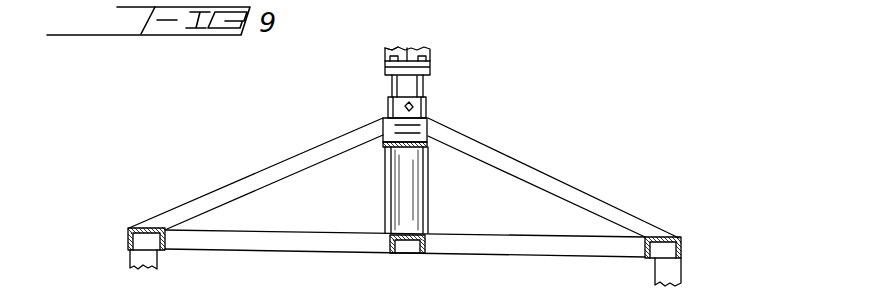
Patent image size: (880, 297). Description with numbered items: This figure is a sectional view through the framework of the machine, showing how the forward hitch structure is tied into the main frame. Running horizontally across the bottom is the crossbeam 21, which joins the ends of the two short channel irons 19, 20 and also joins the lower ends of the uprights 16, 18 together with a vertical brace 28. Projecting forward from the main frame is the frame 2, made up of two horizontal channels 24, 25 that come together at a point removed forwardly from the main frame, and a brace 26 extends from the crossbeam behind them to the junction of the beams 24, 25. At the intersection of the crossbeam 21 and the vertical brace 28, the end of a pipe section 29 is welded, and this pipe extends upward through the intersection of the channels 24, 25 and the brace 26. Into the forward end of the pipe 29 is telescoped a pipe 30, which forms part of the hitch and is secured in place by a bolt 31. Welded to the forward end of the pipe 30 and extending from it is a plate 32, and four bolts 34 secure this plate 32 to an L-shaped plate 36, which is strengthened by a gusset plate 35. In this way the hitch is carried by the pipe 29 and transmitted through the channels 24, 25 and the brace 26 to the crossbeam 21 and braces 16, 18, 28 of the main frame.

The frame 2 is at (575, 164).
The vertical brace 16 is at (662, 237).
The vertical brace 18 is at (130, 228).
The short channel iron 19 is at (681, 272).
The short channel iron 20 is at (128, 262).
The crossbeam 21 is at (232, 249).
The horizontal channel 24 is at (505, 160).
The horizontal channel 25 is at (227, 190).
The brace 26 is at (383, 120).
The vertical brace 28 is at (391, 240).
The pipe section 29 is at (388, 205).
The pipe 30 is at (392, 83).
The bolt 31 is at (413, 106).
The plate 32 is at (430, 70).
The bolts 34 is at (388, 57).
The gusset plate 35 is at (407, 48).
The L-shaped plate 36 is at (385, 49).